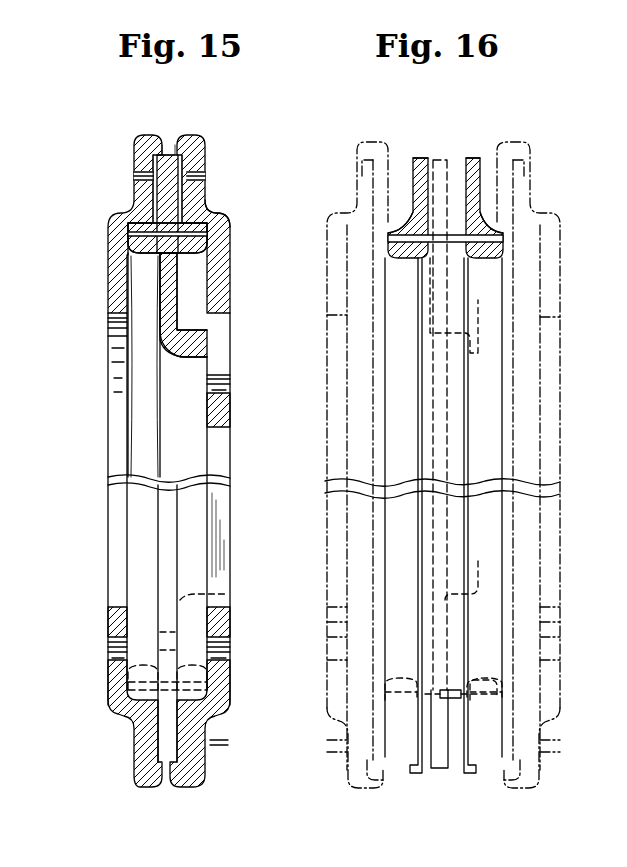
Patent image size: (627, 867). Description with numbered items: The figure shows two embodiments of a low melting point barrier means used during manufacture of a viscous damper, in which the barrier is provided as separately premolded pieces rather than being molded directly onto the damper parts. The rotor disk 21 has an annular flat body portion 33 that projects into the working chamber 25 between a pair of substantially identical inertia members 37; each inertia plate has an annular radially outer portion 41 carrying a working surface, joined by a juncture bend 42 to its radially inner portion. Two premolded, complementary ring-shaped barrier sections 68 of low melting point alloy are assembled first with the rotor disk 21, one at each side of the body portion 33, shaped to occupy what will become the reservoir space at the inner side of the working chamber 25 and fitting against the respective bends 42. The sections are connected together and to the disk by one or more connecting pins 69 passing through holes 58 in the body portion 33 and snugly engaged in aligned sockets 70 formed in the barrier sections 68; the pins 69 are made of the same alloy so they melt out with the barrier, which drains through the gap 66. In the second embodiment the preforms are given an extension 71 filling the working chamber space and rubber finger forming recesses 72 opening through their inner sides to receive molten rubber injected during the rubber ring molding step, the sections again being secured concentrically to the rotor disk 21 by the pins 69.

In FIG. 15, the rotor disk 21 is at (183, 340).
In FIG. 16, the rotor disk 21 is at (480, 342).
In FIG. 15, the working chamber 25 is at (157, 212).
In FIG. 15, the annular flat body portion 33 is at (180, 178).
In FIG. 16, the annular flat body portion 33 is at (440, 165).
In FIG. 15, the inertia member 37 is at (118, 305).
In FIG. 16, the inertia member 37 is at (338, 302).
In FIG. 15, the radially outer portion 41 is at (140, 148).
In FIG. 15, the juncture bend 42 is at (212, 211).
In FIG. 15, the holes 58 is at (158, 250).
In FIG. 15, the gap 66 is at (168, 152).
In FIG. 15, the barrier section 68 is at (142, 258).
In FIG. 16, the barrier section 68 is at (393, 257).
In FIG. 15, the connecting pin 69 is at (208, 235).
In FIG. 16, the connecting pin 69 is at (500, 237).
In FIG. 15, the socket 70 is at (130, 232).
In FIG. 16, the socket 70 is at (390, 238).
In FIG. 16, the extension 71 is at (428, 212).
In FIG. 16, the rubber finger forming recess 72 is at (470, 200).